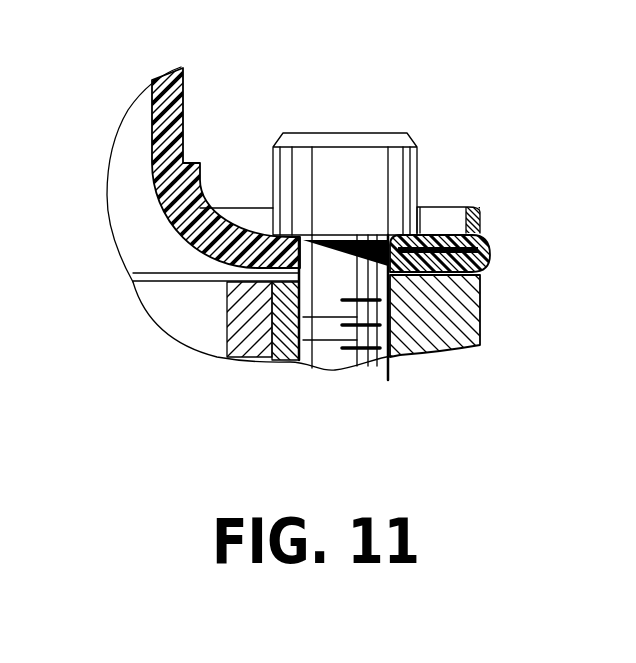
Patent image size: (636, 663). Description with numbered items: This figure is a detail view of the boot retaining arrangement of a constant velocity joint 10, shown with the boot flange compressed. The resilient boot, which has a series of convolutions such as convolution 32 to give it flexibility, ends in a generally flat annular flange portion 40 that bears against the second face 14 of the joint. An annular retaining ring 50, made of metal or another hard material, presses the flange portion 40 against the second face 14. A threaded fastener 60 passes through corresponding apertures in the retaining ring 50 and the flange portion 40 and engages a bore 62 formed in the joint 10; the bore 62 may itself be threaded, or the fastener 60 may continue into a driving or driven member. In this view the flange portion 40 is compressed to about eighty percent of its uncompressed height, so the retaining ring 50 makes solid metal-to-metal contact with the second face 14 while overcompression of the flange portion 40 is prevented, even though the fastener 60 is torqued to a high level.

The constant velocity joint 10 is at (468, 312).
The second face 14 is at (153, 273).
The convolution 32 is at (176, 122).
The flange portion 40 is at (480, 258).
The retaining ring 50 is at (442, 238).
The threaded fastener 60 is at (343, 170).
The bore 62 is at (390, 372).